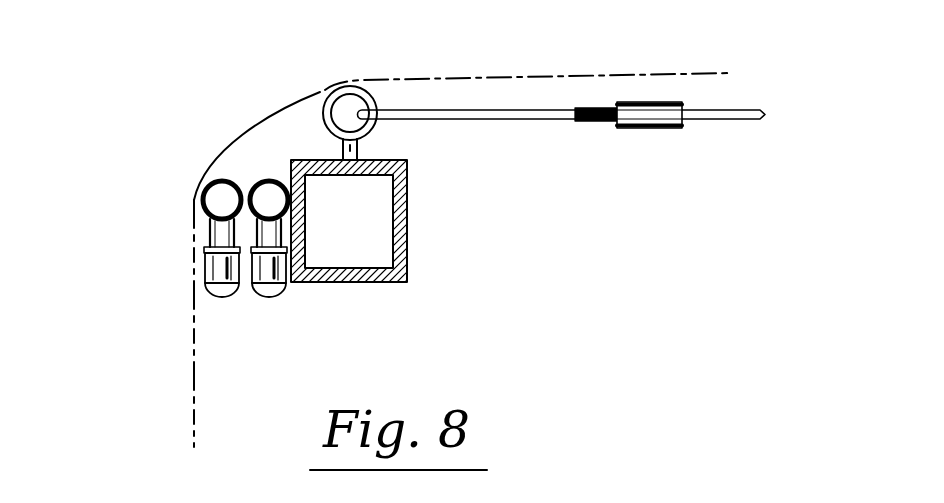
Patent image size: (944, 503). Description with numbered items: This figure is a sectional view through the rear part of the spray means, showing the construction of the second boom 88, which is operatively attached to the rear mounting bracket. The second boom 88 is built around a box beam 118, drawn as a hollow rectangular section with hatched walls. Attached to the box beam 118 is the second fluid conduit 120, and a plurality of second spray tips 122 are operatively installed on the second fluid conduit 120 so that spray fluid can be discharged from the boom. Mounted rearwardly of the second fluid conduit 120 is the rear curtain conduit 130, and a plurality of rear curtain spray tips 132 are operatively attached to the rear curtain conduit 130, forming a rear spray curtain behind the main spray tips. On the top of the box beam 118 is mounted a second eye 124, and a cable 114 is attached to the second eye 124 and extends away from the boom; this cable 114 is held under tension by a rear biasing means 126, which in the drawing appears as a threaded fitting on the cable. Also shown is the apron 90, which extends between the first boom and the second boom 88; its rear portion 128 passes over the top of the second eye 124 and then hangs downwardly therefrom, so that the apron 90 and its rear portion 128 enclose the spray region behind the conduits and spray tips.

The second boom 88 is at (493, 319).
The apron 90 is at (560, 57).
The cable 114 is at (740, 120).
The box beam 118 is at (408, 213).
The second fluid conduit 120 is at (272, 178).
The second spray tips 122 is at (277, 293).
The second eye 124 is at (375, 123).
The rear biasing means 126 is at (632, 128).
The rear portion of apron 128 is at (193, 298).
The rear curtain conduit 130 is at (218, 180).
The rear curtain spray tips 132 is at (230, 294).